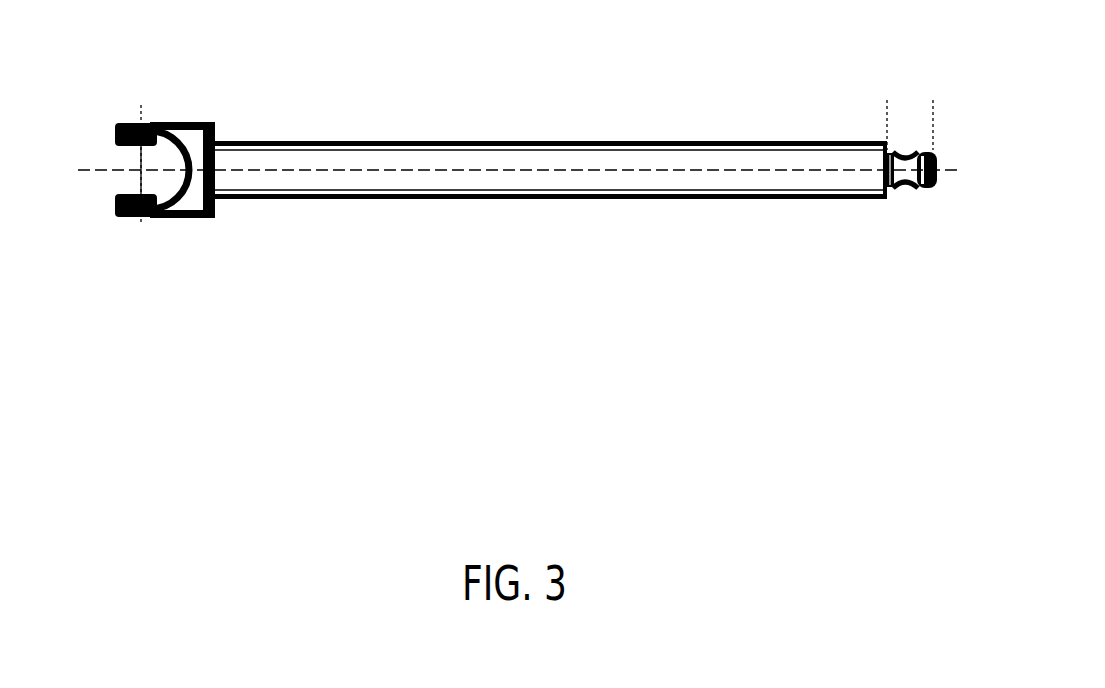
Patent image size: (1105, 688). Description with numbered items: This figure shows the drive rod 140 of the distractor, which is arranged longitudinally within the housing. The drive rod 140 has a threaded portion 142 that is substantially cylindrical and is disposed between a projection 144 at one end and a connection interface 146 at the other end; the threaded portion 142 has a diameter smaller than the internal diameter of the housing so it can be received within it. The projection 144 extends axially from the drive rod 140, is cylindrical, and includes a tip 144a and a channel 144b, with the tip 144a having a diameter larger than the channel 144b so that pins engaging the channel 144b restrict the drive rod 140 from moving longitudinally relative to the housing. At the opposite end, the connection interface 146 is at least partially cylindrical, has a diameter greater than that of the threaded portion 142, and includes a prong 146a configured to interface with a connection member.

The drive rod 140 is at (550, 173).
The threaded portion 142 is at (518, 140).
The projection 144 is at (961, 177).
The tip 144a is at (907, 206).
The channel 144b is at (905, 150).
The connection interface 146 is at (154, 212).
The prong 146a is at (134, 220).